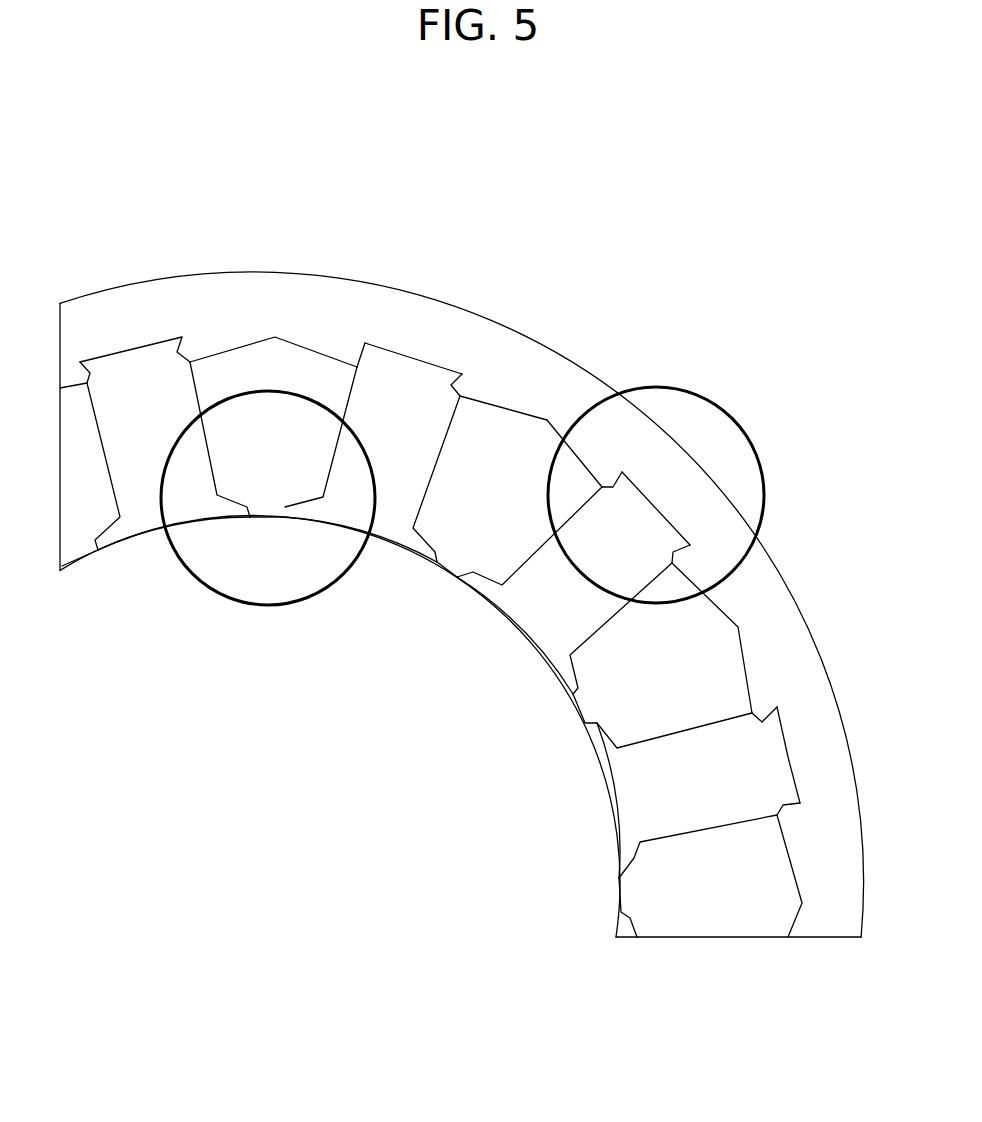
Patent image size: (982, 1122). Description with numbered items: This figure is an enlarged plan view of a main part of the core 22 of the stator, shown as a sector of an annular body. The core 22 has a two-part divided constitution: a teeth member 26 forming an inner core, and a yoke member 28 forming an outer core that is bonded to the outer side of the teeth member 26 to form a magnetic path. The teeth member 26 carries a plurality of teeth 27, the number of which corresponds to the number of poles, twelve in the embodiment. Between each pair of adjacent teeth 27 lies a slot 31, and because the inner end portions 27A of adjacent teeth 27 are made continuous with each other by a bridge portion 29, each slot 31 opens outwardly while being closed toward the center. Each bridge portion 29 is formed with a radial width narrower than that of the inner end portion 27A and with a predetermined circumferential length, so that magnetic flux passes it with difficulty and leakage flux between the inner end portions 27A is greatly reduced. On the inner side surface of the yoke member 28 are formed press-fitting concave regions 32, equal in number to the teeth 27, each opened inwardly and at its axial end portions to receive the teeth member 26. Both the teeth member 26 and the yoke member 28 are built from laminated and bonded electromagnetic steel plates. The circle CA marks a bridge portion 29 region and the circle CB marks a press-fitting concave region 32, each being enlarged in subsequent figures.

The core 22 is at (462, 538).
The teeth member 26 is at (340, 726).
The teeth 27 is at (431, 637).
The inner end portion 27A is at (359, 697).
The yoke member 28 is at (462, 562).
The bridge portion 29 is at (349, 727).
The slot 31 is at (77, 516).
The press-fitting concave region 32 is at (451, 561).
The circle CA is at (268, 520).
The circle CB is at (656, 467).